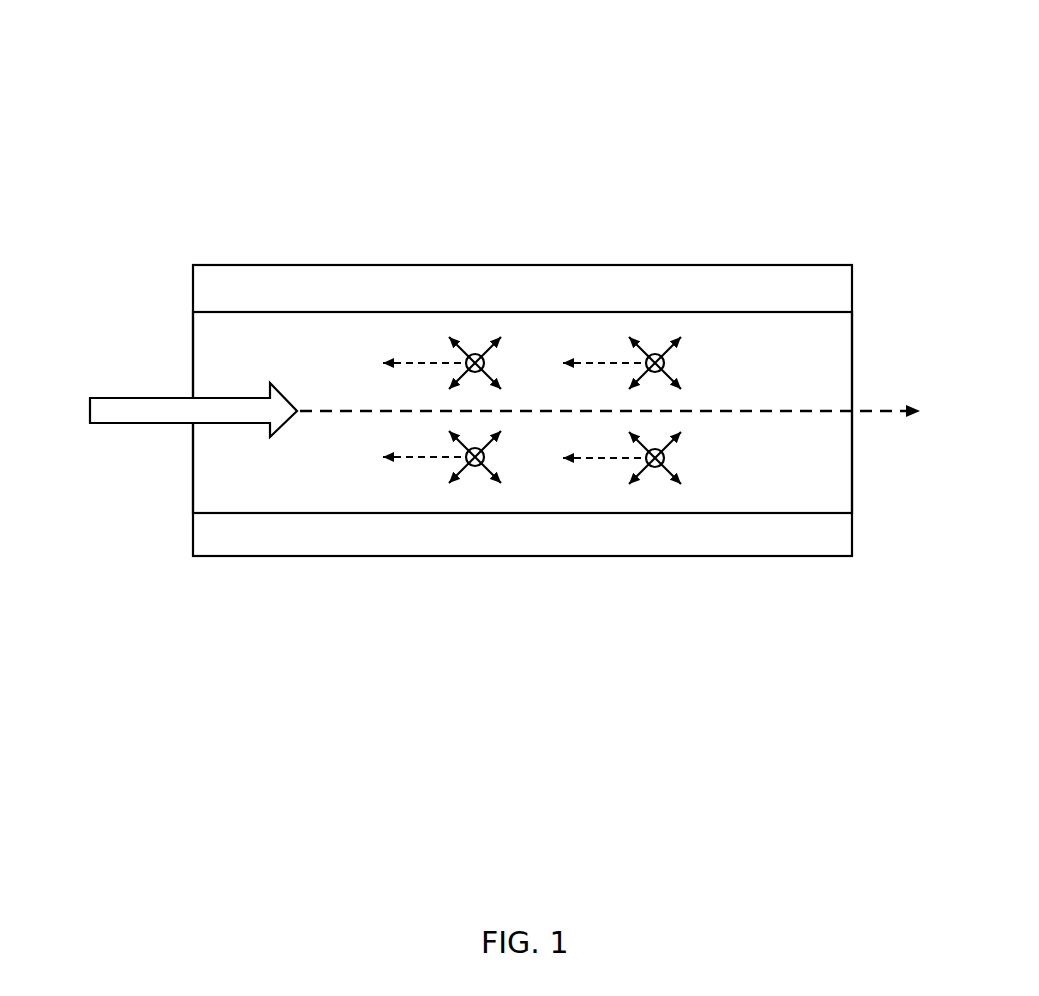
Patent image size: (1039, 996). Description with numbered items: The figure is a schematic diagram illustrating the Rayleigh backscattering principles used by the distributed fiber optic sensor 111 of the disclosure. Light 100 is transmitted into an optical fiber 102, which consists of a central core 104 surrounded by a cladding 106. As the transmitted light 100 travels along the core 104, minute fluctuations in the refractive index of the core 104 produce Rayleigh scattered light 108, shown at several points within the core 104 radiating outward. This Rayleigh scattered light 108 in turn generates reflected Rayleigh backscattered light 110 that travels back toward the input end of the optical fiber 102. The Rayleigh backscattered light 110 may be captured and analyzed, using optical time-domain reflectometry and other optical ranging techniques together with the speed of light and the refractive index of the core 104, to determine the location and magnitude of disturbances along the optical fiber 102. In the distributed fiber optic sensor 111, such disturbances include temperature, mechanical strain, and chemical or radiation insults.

The light 100 is at (148, 390).
The optical fiber 102 is at (348, 253).
The core 104 is at (243, 340).
The cladding 106 is at (295, 290).
The Rayleigh scattered light 108 is at (475, 335).
The Rayleigh backscattered light 110 is at (430, 347).
The distributed fiber optic sensor 111 is at (522, 250).